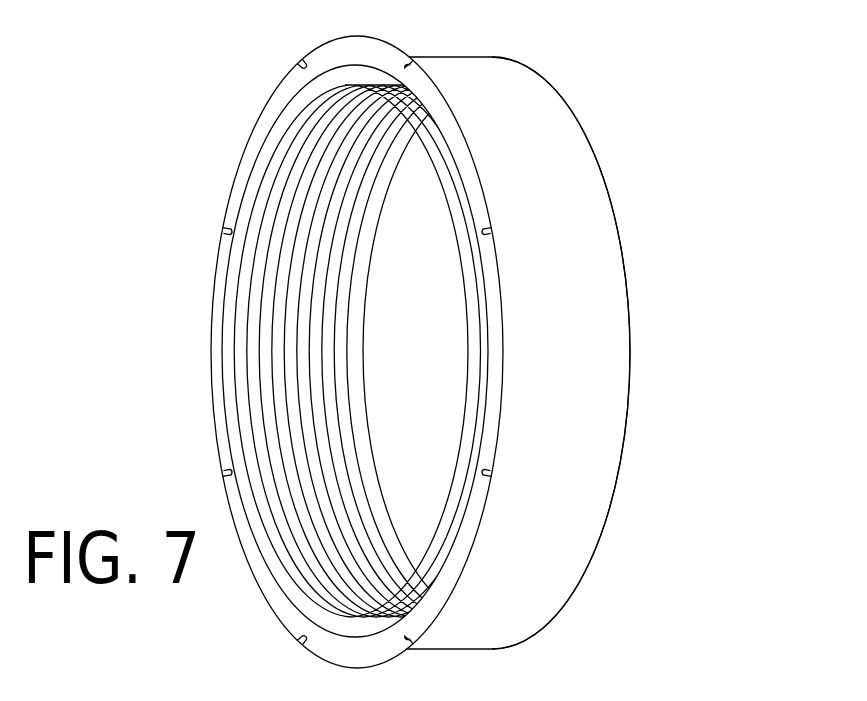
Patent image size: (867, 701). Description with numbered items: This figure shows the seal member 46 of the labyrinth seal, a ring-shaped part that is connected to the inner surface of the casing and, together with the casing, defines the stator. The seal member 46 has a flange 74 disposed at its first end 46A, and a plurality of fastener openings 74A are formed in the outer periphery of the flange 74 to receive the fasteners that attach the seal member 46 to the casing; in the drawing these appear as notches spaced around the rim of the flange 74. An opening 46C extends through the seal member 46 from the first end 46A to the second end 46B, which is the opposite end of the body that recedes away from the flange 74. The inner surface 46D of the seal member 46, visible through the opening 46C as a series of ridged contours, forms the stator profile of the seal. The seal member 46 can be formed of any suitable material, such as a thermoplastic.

The seal member 46 is at (602, 152).
The first end 46A is at (212, 407).
The second end 46B is at (633, 405).
The opening 46C is at (415, 320).
The inner surface 46D is at (258, 309).
The flange 74 is at (328, 44).
The fastener openings 74A is at (223, 229).